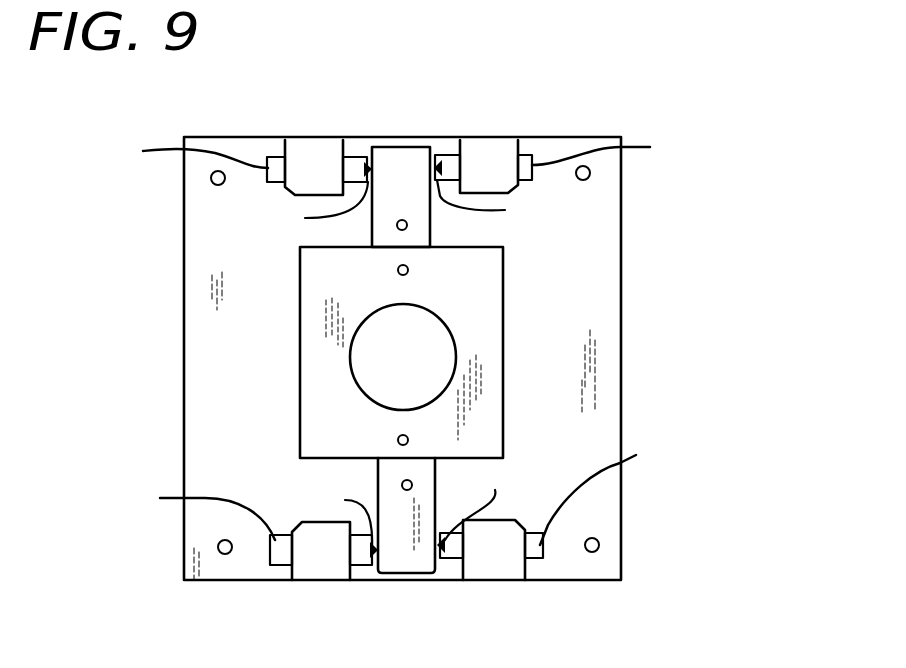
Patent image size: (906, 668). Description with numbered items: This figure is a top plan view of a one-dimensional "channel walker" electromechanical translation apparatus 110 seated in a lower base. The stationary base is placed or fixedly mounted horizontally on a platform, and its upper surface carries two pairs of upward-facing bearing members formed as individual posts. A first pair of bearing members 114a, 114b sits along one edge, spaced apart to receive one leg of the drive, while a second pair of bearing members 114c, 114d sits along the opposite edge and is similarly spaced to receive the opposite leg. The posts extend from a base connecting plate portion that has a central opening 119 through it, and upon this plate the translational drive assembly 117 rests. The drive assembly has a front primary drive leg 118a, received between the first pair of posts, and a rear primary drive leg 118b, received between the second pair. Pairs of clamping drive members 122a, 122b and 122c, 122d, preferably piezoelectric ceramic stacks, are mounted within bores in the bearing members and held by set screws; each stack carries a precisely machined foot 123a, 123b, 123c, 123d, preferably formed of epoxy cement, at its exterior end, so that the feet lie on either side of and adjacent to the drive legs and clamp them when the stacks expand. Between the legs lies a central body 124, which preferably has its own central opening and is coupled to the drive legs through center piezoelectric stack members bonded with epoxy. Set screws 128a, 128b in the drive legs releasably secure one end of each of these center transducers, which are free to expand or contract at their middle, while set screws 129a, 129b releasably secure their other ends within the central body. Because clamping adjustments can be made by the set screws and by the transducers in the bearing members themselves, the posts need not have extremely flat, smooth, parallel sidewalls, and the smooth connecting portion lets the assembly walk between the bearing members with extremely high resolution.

The electromechanical translation apparatus 110 is at (658, 76).
The bearing member 114a is at (306, 152).
The bearing member 114b is at (493, 147).
The bearing member 114c is at (312, 565).
The bearing member 114d is at (488, 560).
The translational drive assembly 117 is at (518, 348).
The front primary drive leg 118a is at (400, 155).
The rear primary drive leg 118b is at (402, 565).
The central opening 119 is at (443, 326).
The clamping drive member 122a is at (156, 150).
The clamping drive member 122b is at (629, 148).
The clamping drive member 122c is at (171, 510).
The clamping drive member 122d is at (625, 494).
The foot 123a is at (299, 210).
The foot 123b is at (508, 204).
The foot 123c is at (321, 516).
The foot 123d is at (485, 501).
The central body 124 is at (316, 345).
The set screw 128a is at (408, 226).
The set screw 128b is at (405, 485).
The set screw 129a is at (398, 270).
The set screw 129b is at (398, 440).